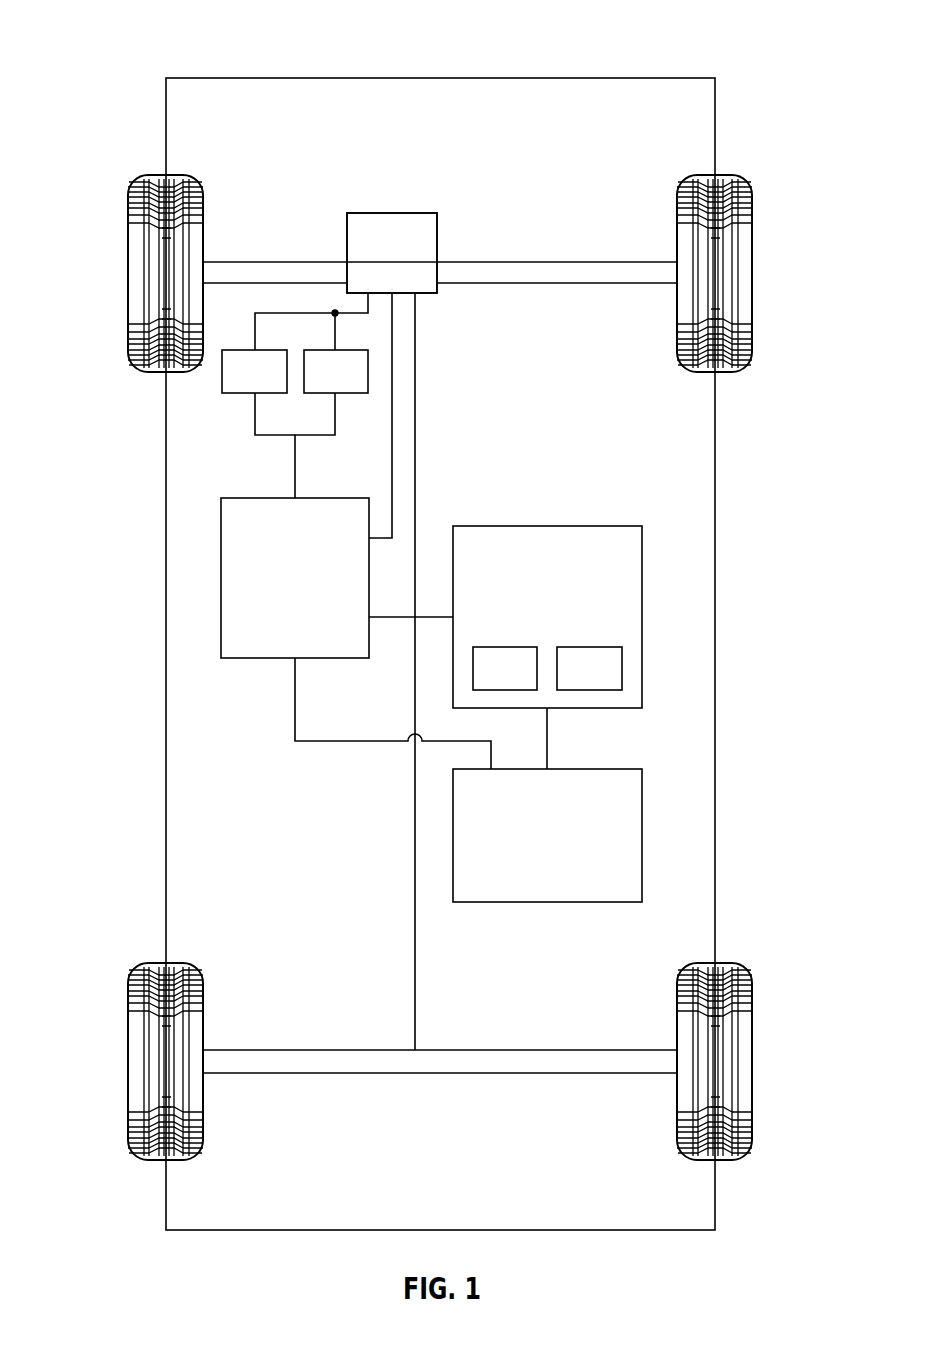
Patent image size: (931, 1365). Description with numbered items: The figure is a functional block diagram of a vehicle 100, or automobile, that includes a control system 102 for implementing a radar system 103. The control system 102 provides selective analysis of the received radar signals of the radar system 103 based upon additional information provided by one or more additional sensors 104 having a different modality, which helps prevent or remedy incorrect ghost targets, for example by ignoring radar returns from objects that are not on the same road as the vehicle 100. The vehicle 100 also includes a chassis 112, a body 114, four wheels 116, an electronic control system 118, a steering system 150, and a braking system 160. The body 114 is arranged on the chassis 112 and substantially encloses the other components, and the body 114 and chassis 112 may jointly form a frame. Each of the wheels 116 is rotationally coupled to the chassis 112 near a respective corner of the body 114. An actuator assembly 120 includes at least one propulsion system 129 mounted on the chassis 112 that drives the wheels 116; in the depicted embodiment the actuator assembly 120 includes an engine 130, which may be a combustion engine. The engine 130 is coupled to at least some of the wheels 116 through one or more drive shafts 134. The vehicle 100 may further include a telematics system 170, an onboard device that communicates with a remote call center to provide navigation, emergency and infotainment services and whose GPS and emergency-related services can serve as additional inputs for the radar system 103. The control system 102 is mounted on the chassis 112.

The vehicle 100 is at (151, 48).
The control system 102 is at (528, 608).
The radar system 103 is at (486, 682).
The additional sensors 104 is at (570, 682).
The chassis 112 is at (415, 861).
The body 114 is at (166, 647).
The wheels 116 is at (128, 273).
The electronic control system 118 is at (276, 591).
The actuator assembly 120 is at (429, 305).
The propulsion system 129 is at (391, 213).
The engine 130 is at (372, 251).
The drive shafts 134 is at (260, 262).
The steering system 150 is at (235, 385).
The braking system 160 is at (317, 385).
The telematics system 170 is at (528, 848).